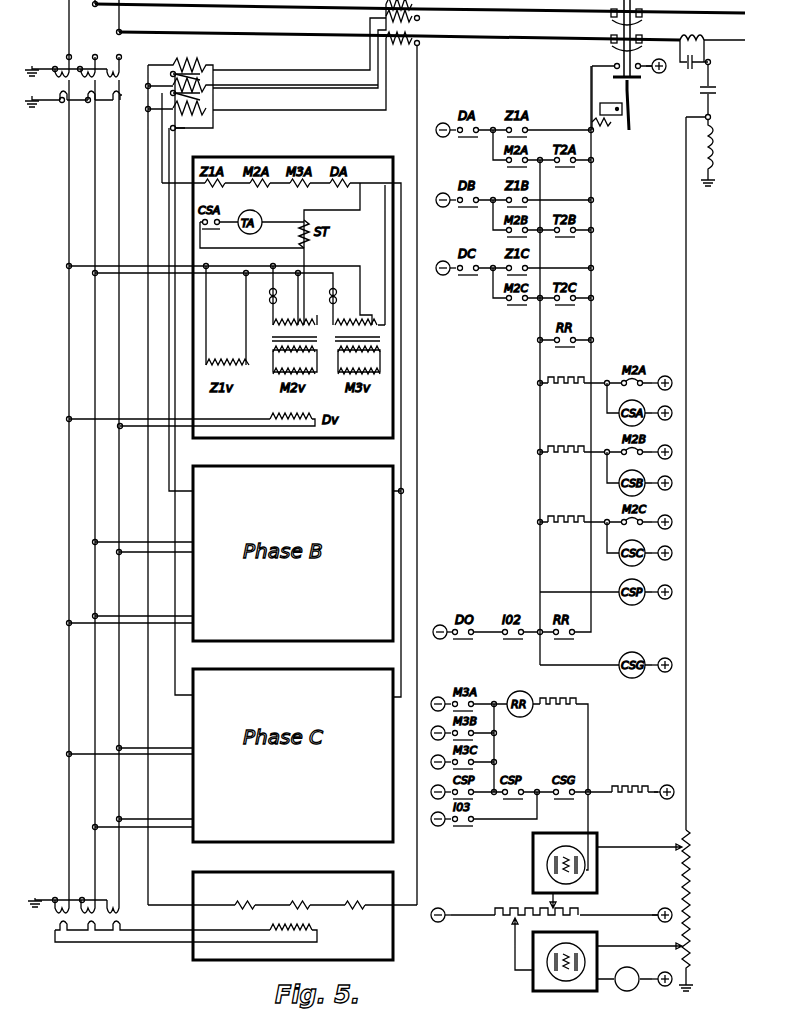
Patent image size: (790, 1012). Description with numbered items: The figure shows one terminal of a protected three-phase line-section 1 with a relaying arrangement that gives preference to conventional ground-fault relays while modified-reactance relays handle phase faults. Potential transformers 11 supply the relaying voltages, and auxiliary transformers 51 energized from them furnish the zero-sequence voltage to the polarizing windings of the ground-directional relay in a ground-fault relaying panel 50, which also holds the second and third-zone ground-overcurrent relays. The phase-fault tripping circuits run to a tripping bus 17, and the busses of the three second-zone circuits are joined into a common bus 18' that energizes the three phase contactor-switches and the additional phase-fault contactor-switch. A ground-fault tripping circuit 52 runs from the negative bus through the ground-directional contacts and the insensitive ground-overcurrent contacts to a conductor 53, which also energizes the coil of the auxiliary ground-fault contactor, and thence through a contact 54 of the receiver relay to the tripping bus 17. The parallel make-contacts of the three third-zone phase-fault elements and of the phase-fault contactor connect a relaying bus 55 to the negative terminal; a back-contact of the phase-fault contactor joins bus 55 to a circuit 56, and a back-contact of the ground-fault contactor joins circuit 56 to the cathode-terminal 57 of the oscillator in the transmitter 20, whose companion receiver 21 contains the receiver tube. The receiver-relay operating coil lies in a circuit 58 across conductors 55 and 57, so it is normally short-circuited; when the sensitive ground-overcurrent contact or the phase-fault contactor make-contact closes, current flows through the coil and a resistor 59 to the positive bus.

The protected three-phase line-section 1 is at (545, 38).
The potential transformers 11 is at (118, 89).
The tripping bus 17 is at (590, 130).
The common bus 18' is at (524, 400).
The transmitter 20 is at (598, 881).
The receiver 21 is at (598, 937).
The ground-fault relaying panel 50 is at (316, 872).
The auxiliary transformers 51 is at (121, 925).
The ground-fault tripping circuit 52 is at (448, 625).
The conductor 53 is at (541, 629).
The contact of the receiver relay 54 is at (575, 638).
The relaying bus 55 is at (496, 722).
The circuit 56 is at (538, 789).
The cathode-terminal 57 is at (592, 795).
The circuit 58 is at (541, 702).
The resistor 59 is at (642, 783).